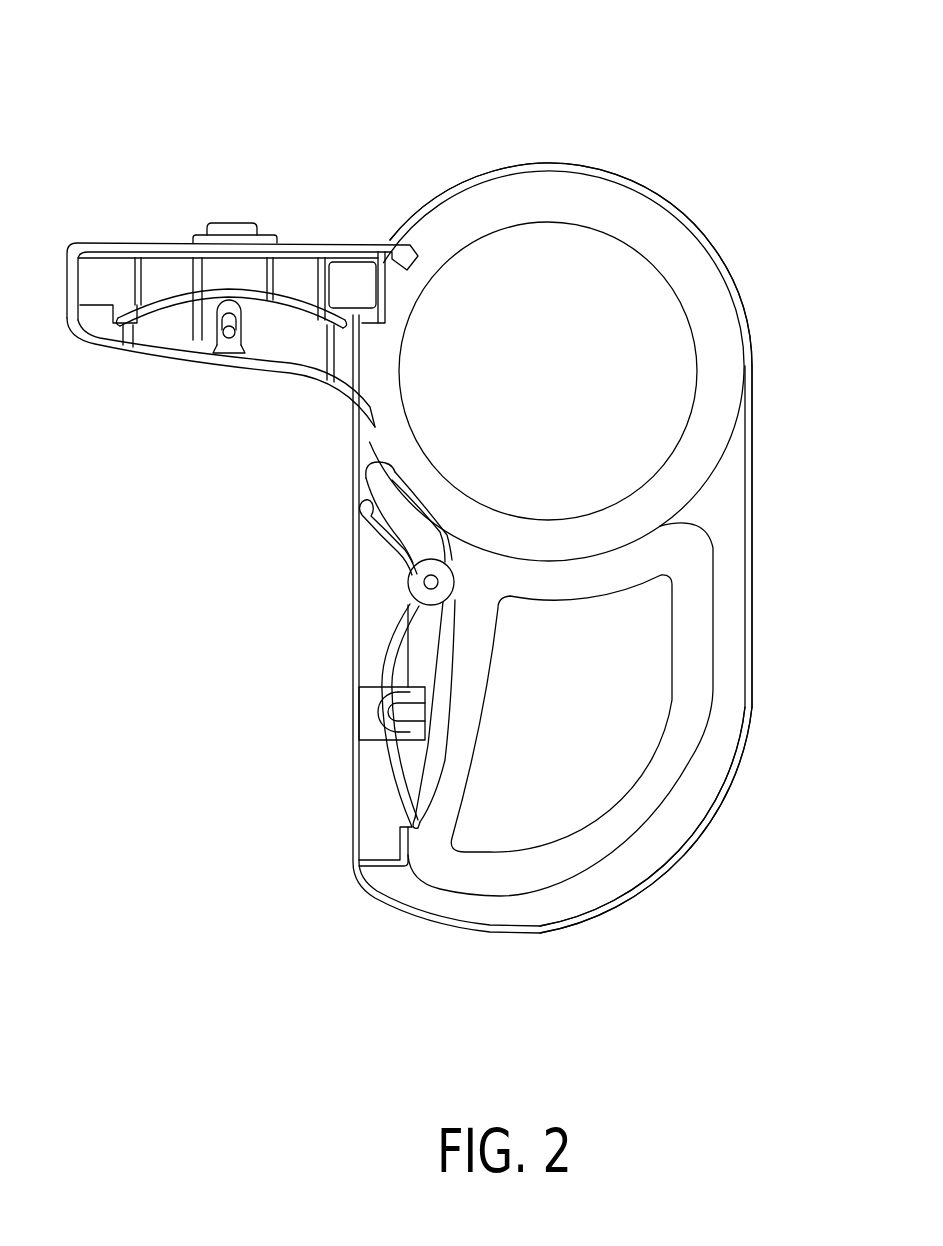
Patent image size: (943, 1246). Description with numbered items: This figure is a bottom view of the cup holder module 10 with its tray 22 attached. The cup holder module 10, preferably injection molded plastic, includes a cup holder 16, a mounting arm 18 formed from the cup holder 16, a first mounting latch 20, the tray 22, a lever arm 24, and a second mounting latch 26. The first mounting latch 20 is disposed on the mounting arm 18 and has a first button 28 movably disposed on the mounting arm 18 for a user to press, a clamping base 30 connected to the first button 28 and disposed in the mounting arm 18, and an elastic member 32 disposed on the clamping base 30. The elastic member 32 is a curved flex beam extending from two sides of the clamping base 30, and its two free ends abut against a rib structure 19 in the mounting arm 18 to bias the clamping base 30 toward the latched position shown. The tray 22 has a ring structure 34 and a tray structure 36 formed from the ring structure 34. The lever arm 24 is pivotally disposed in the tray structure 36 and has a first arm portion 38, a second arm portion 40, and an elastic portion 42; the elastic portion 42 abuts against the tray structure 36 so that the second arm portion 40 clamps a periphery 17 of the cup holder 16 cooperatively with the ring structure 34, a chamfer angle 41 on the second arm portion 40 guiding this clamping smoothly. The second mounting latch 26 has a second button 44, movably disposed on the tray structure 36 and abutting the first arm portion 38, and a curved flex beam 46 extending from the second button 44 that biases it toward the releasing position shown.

The cup holder module 10 is at (768, 87).
The cup holder 16 is at (556, 286).
The periphery 17 is at (728, 455).
The mounting arm 18 is at (178, 249).
The rib structure 19 is at (131, 330).
The first mounting latch 20 is at (229, 224).
The tray 22 is at (631, 897).
The lever arm 24 is at (414, 583).
The second mounting latch 26 is at (338, 718).
The first button 28 is at (248, 231).
The clamping base 30 is at (248, 347).
The elastic member 32 is at (165, 300).
The ring structure 34 is at (722, 250).
The tray structure 36 is at (456, 905).
The first arm portion 38 is at (418, 652).
The second arm portion 40 is at (383, 486).
The chamfer angle 41 is at (386, 475).
The elastic portion 42 is at (376, 528).
The second button 44 is at (342, 753).
The curved flex beam 46 is at (400, 790).